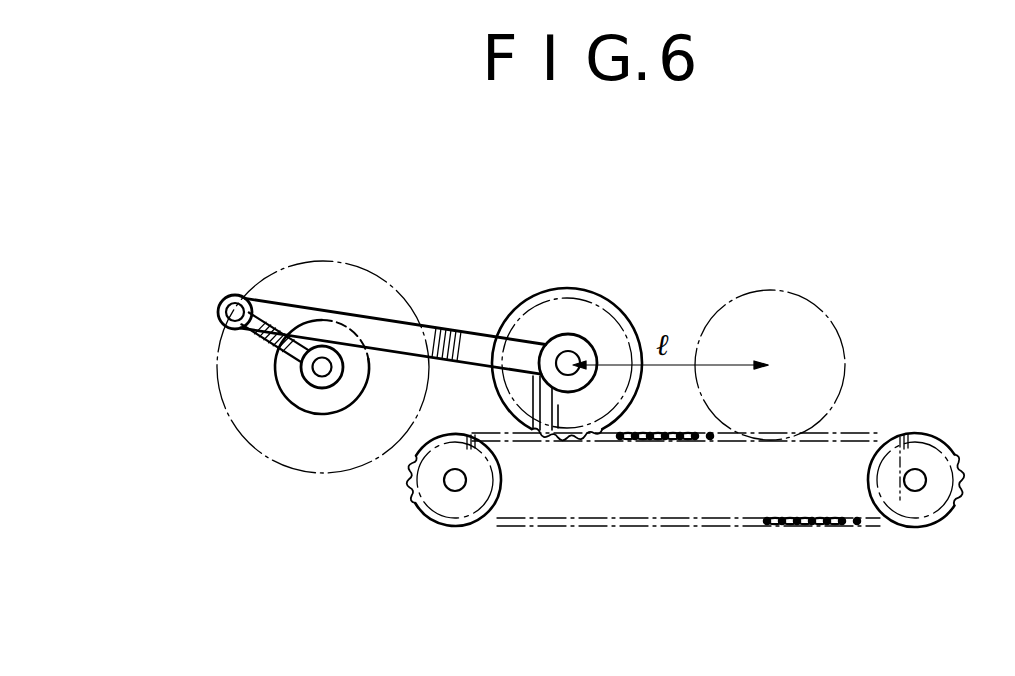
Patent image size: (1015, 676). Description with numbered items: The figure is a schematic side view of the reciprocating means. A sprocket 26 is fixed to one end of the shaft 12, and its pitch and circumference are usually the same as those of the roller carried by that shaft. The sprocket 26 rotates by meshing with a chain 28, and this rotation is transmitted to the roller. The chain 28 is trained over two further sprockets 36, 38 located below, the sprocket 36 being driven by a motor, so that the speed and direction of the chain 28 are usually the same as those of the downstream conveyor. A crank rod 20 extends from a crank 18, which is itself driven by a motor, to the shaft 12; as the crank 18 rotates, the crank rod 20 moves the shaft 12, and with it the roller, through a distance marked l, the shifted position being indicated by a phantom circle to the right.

The shaft 12 is at (563, 358).
The crank 18 is at (276, 345).
The crank rod 20 is at (388, 330).
The sprocket 26 is at (597, 308).
The chain 28 is at (771, 528).
The sprocket 36 is at (440, 510).
The sprocket 38 is at (925, 448).